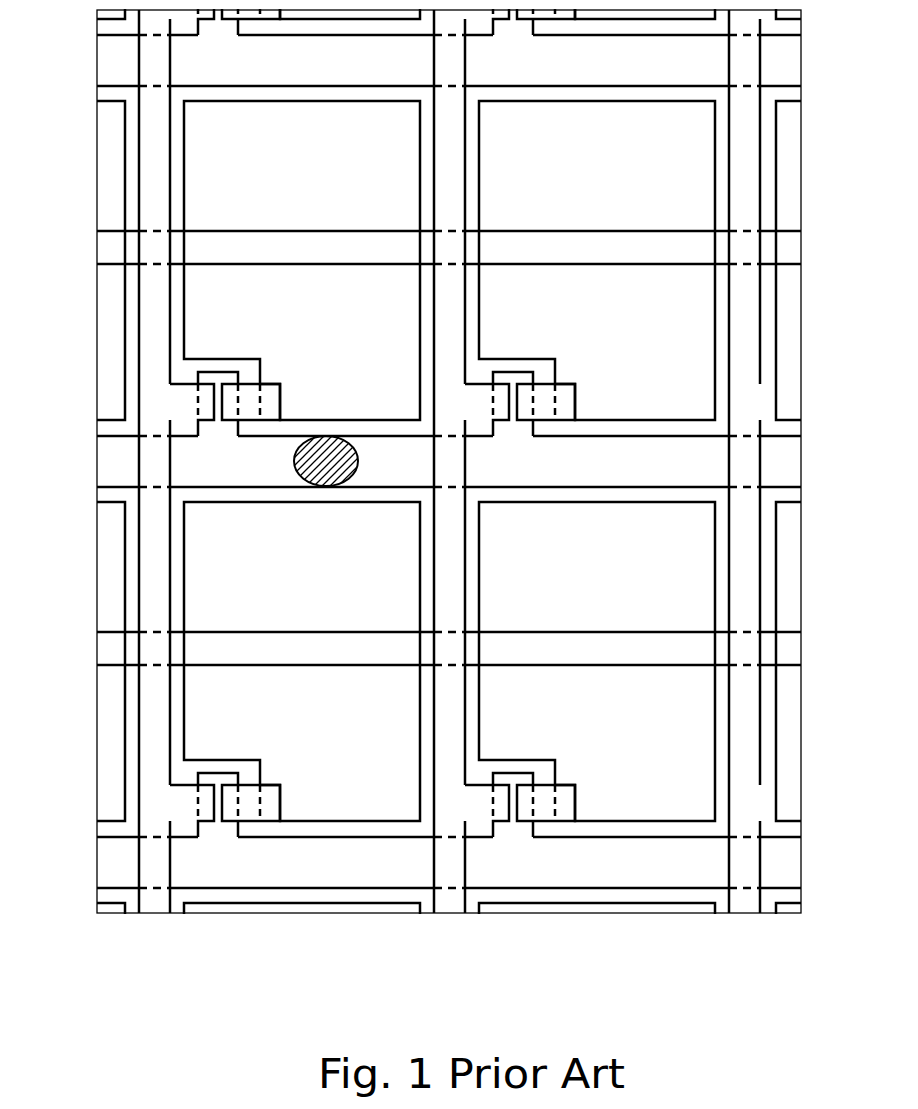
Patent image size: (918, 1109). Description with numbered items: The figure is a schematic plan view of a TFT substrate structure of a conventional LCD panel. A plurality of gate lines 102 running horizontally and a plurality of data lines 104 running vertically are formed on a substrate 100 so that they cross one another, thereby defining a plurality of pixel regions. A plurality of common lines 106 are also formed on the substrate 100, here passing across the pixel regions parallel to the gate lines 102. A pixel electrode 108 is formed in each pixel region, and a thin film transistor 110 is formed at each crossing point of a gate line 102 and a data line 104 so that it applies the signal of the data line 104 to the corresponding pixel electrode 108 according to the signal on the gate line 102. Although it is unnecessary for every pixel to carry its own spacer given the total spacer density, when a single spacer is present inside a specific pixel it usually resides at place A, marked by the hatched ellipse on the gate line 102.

The substrate 100 is at (793, 688).
The gate lines 102 is at (840, 868).
The data lines 104 is at (155, 698).
The common lines 106 is at (786, 648).
The pixel electrode 108 is at (690, 748).
The thin film transistor 110 is at (180, 800).
The place A is at (292, 465).